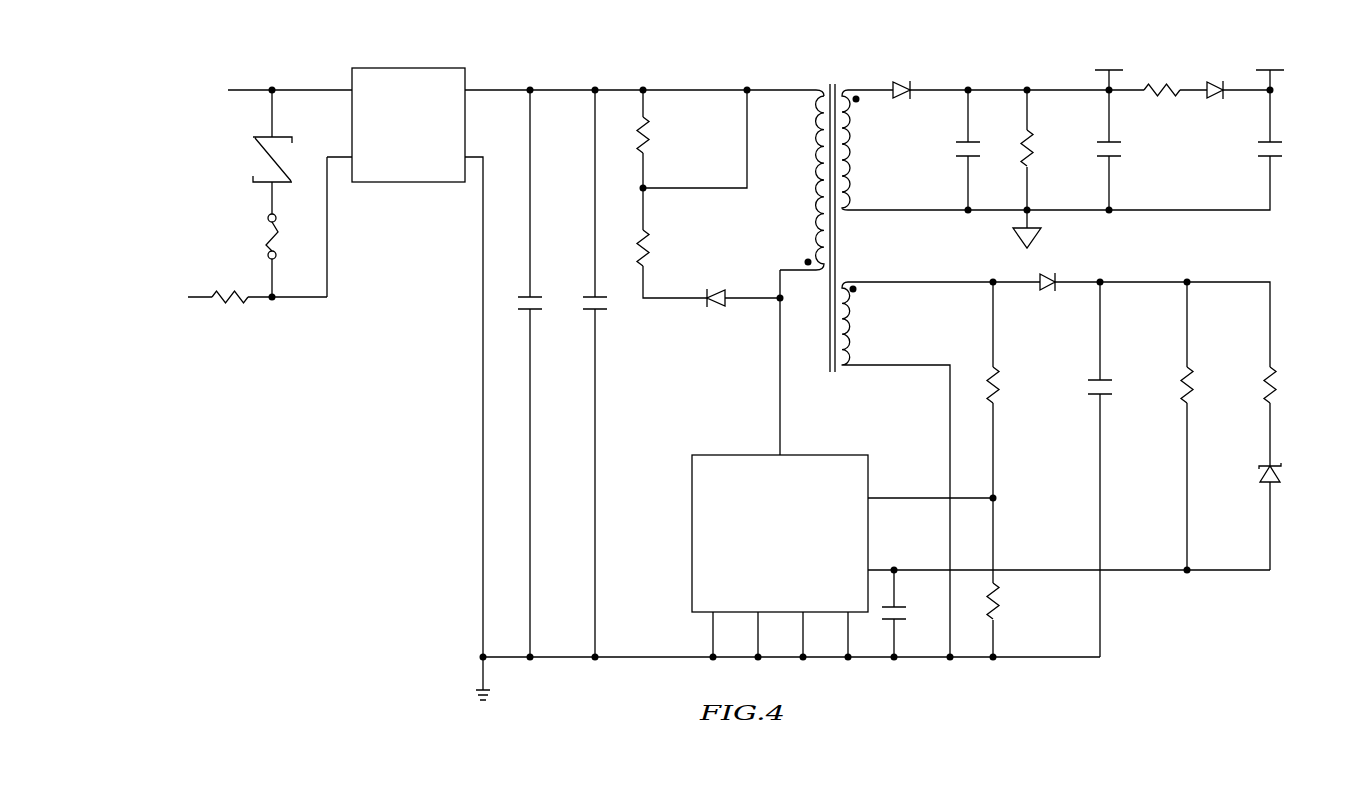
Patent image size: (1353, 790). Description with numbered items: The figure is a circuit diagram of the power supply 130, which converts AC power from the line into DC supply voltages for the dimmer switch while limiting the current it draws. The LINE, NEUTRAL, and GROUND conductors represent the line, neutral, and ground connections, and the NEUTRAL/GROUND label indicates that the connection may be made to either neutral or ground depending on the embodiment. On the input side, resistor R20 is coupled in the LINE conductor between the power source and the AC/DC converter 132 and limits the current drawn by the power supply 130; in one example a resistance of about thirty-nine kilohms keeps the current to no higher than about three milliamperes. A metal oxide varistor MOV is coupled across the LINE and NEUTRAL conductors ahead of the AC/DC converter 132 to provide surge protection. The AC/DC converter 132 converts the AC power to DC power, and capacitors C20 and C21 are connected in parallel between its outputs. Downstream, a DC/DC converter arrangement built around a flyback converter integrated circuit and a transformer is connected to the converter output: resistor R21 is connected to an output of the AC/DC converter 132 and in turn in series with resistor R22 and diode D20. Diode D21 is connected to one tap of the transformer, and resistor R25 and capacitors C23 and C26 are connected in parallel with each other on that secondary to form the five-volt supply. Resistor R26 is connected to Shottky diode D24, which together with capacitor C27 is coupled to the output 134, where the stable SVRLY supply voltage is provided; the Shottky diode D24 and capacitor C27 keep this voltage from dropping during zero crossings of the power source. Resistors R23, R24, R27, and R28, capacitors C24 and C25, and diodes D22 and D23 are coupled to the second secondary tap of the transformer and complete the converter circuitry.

The power supply 130 is at (318, 43).
The AC/DC converter 132 is at (409, 182).
The output 134 is at (1268, 92).
The resistor R20 is at (230, 282).
The metal oxide varistor MOV is at (254, 159).
The capacitor C20 is at (519, 289).
The capacitor C21 is at (586, 289).
The resistor R21 is at (661, 135).
The resistor R22 is at (661, 248).
The diode D20 is at (716, 312).
The diode D21 is at (901, 76).
The capacitor C23 is at (951, 148).
The resistor R25 is at (1044, 148).
The capacitor C26 is at (1129, 148).
The resistor R26 is at (1162, 75).
The Shottky diode D24 is at (1216, 76).
The capacitor C27 is at (1252, 148).
The diode D22 is at (1048, 290).
The resistor R23 is at (1012, 385).
The capacitor C25 is at (1093, 403).
The resistor R27 is at (1174, 385).
The resistor R28 is at (1256, 385).
The diode D23 is at (1254, 479).
The capacitor C24 is at (911, 604).
The resistor R24 is at (1011, 601).